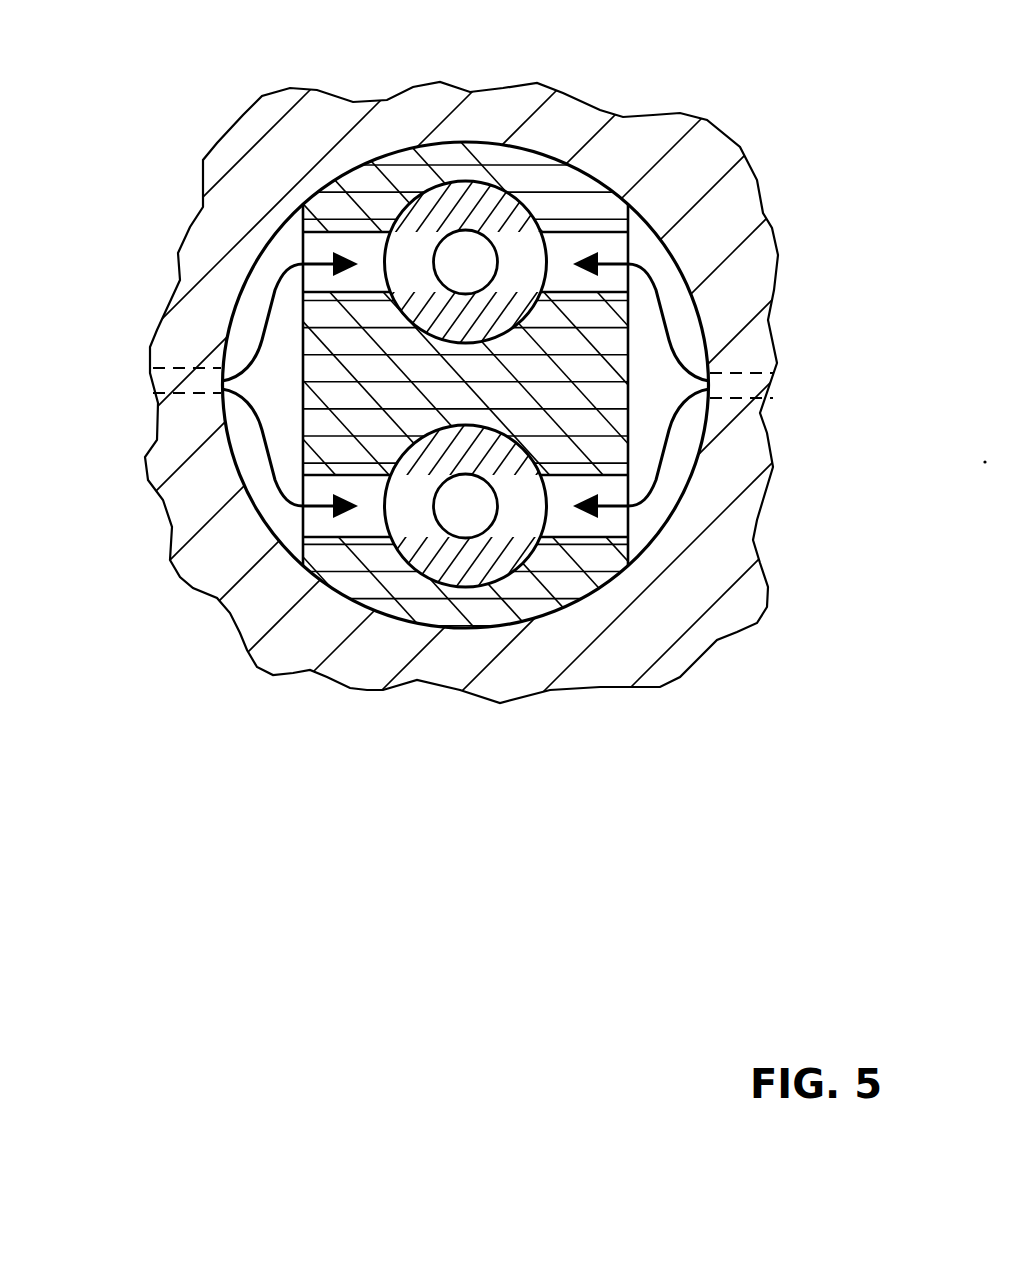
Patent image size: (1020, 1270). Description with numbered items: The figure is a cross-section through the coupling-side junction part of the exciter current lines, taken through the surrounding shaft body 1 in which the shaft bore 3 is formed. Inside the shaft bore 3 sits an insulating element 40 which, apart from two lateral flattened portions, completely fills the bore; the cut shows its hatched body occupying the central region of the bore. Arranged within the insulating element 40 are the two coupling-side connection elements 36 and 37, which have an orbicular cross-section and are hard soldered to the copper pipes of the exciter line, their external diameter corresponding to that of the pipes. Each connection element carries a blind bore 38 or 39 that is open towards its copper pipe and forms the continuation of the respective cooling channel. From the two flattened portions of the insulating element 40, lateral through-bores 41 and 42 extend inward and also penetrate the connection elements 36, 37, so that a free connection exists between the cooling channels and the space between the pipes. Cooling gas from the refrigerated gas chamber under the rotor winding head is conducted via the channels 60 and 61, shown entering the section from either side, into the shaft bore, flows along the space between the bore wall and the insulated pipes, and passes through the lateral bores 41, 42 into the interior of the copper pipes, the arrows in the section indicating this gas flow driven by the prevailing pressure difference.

The housing body 1 is at (712, 587).
The shaft bore 3 is at (280, 423).
The coupling-side connection element 36 is at (497, 563).
The coupling-side connection element 37 is at (499, 212).
The blind bore 38 is at (463, 507).
The blind bore 39 is at (466, 263).
The insulating element 40 is at (592, 342).
The lateral through-bore 41 is at (365, 520).
The lateral through-bore 42 is at (369, 248).
The channel 60 is at (710, 386).
The channel 61 is at (223, 380).